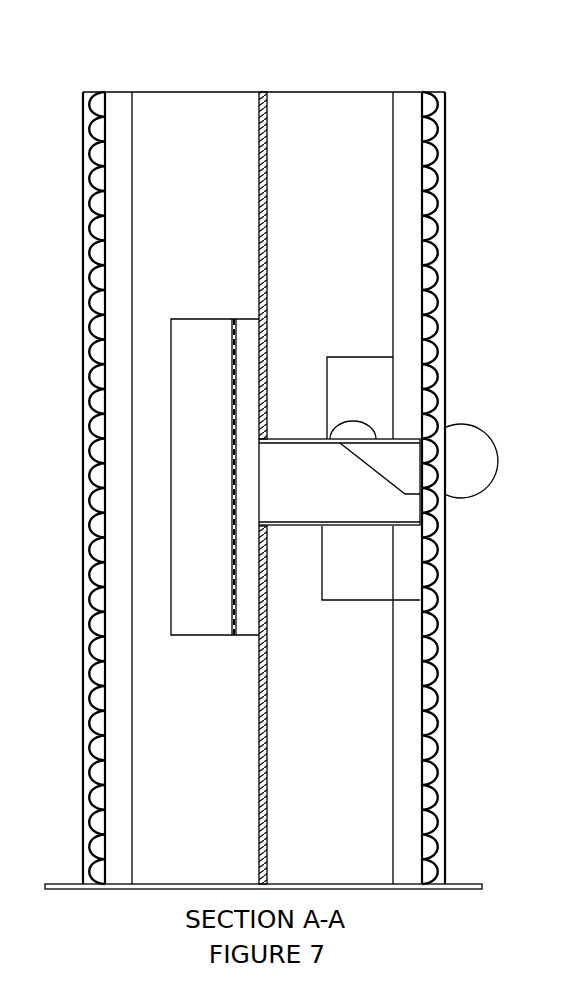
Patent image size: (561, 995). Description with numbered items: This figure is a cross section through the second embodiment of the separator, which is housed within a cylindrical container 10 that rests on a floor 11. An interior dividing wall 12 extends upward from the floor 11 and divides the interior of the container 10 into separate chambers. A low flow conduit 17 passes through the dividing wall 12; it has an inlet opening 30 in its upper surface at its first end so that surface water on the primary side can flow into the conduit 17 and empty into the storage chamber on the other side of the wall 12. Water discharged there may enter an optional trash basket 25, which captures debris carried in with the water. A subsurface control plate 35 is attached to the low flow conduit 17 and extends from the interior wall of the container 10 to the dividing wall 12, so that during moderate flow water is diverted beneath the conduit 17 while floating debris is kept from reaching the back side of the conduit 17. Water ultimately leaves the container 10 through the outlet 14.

The cylindrical container 10 is at (432, 208).
The interior dividing wall 12 is at (368, 92).
The trash basket 25 is at (215, 318).
The low flow conduit 17 is at (278, 494).
The inlet opening 30 is at (423, 475).
The outlet 14 is at (465, 459).
The subsurface control plate 35 is at (402, 582).
The floor 11 is at (383, 888).